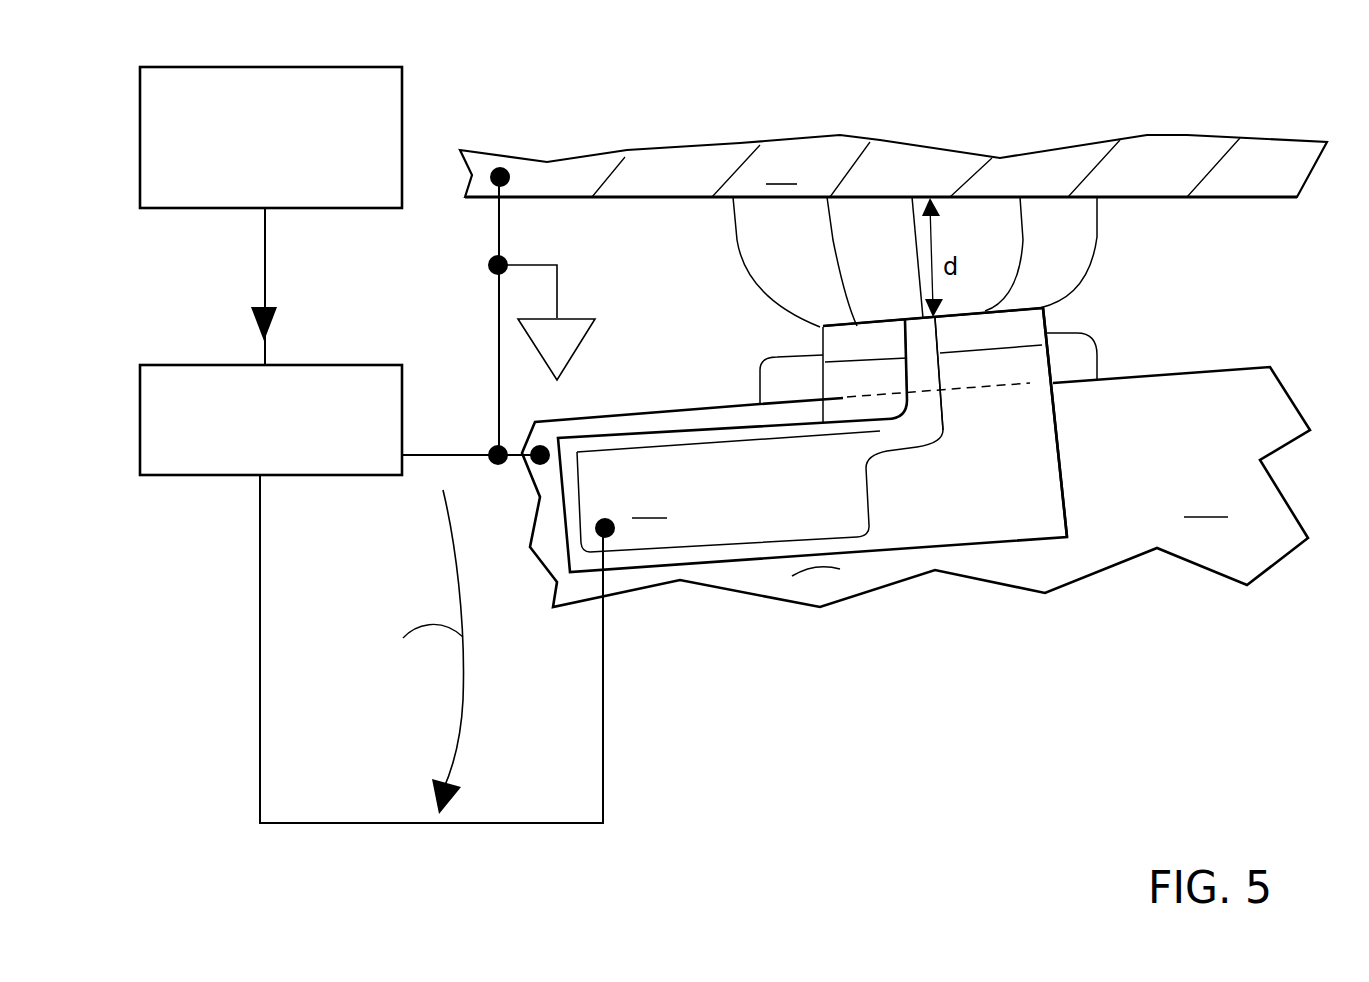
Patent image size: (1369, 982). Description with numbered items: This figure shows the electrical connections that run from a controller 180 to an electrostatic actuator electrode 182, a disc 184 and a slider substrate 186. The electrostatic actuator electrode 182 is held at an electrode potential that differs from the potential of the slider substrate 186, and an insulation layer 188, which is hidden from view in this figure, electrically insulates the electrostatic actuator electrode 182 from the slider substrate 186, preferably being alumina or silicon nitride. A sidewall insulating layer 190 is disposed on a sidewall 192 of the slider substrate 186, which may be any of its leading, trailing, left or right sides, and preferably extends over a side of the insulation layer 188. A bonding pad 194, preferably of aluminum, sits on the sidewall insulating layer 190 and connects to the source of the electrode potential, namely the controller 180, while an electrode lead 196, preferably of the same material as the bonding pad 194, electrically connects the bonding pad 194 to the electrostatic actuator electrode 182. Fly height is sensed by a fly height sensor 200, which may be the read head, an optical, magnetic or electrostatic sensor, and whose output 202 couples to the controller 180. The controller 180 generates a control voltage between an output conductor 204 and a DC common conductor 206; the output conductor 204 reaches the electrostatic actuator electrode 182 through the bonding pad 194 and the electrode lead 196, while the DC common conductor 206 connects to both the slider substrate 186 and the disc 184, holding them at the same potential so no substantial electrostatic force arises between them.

The controller 180 is at (220, 458).
The electrostatic actuator electrode 182 is at (1047, 317).
The disc 184 is at (893, 140).
The slider substrate 186 is at (1190, 440).
The insulation layer 188 is at (1010, 367).
The sidewall insulating layer 190 is at (948, 510).
The sidewall 192 is at (826, 603).
The bonding pad 194 is at (793, 510).
The electrode lead 196 is at (912, 425).
The fly height sensor 200 is at (224, 177).
The output 202 is at (265, 252).
The output conductor 204 is at (260, 548).
The DC common conductor 206 is at (440, 453).